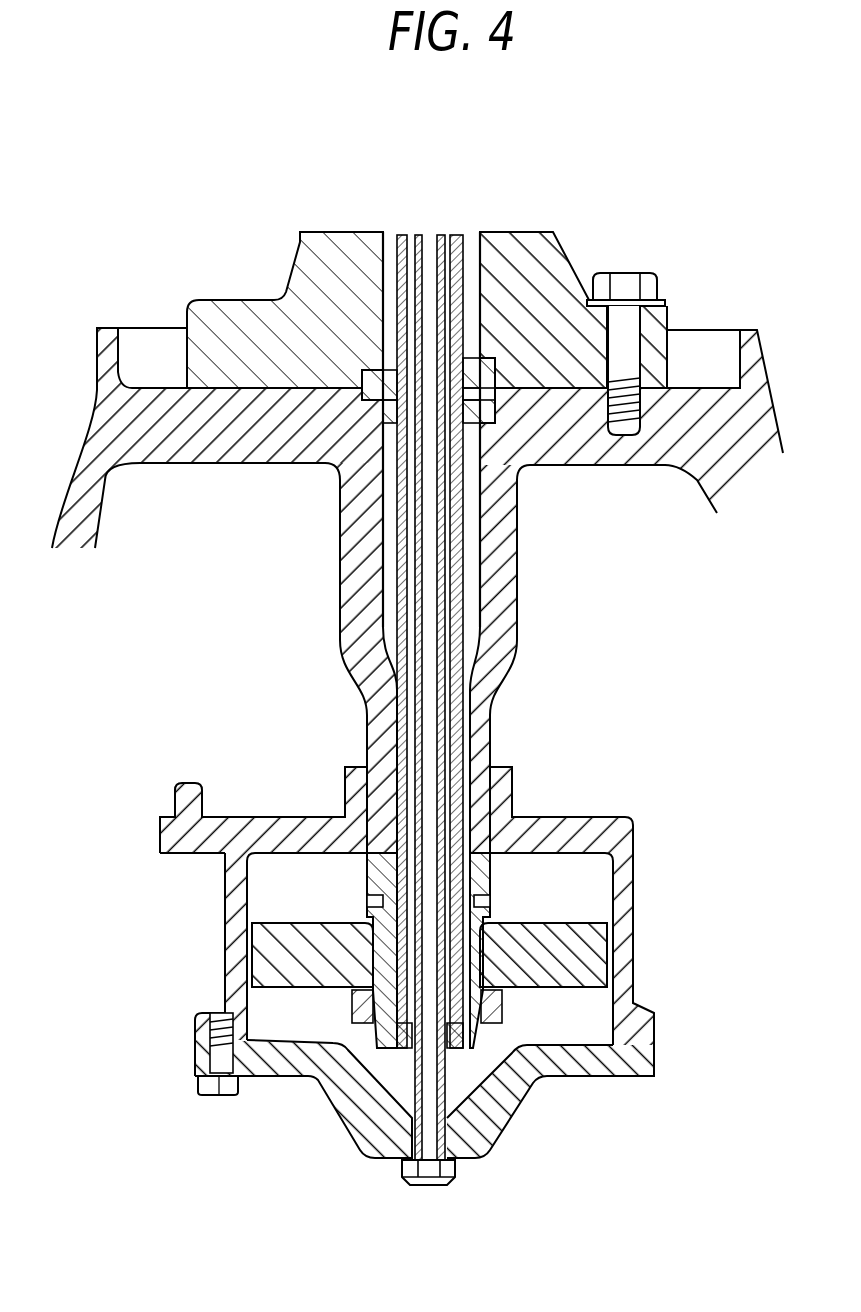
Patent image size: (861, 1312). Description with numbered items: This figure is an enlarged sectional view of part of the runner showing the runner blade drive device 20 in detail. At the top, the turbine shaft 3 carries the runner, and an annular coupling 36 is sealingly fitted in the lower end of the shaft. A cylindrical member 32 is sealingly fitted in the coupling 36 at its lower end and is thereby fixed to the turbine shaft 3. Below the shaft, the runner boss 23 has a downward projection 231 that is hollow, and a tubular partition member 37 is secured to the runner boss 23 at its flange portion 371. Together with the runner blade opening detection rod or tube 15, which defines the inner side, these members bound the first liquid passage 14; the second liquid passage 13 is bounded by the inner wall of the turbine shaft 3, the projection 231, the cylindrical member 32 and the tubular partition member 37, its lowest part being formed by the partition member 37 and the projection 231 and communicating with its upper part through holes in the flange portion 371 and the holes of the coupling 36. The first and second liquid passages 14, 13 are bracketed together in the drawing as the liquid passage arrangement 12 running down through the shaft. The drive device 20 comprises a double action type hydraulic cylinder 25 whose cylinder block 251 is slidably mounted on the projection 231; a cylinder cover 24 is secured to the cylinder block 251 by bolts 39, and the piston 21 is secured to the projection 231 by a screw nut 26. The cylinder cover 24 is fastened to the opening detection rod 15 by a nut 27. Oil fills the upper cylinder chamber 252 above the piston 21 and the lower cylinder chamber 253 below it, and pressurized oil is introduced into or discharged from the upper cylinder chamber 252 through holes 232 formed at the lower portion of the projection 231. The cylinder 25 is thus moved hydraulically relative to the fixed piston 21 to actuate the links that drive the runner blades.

The turbine shaft 3 is at (570, 247).
The lead wire assembly 12 is at (456, 624).
The second liquid passage 13 is at (468, 247).
The first liquid passage 14 is at (445, 240).
The runner blade opening detection rod 15 is at (443, 243).
The runner blade drive device 20 is at (615, 812).
The piston 21 is at (547, 938).
The runner boss 23 is at (625, 453).
The cylinder cover 24 is at (620, 1076).
The hydraulic cylinder 25 is at (640, 870).
The screw nut 26 is at (497, 1023).
The nut 27 is at (440, 1187).
The cylindrical member 32 is at (457, 280).
The annular coupling 36 is at (500, 370).
The tubular partition member 37 is at (458, 570).
The bolts 39 is at (225, 1097).
The projection 231 is at (485, 748).
The holes 232 is at (368, 903).
The cylinder block 251 is at (625, 945).
The upper cylinder chamber 252 is at (265, 875).
The lower cylinder chamber 253 is at (265, 1007).
The flange portion 371 is at (490, 413).